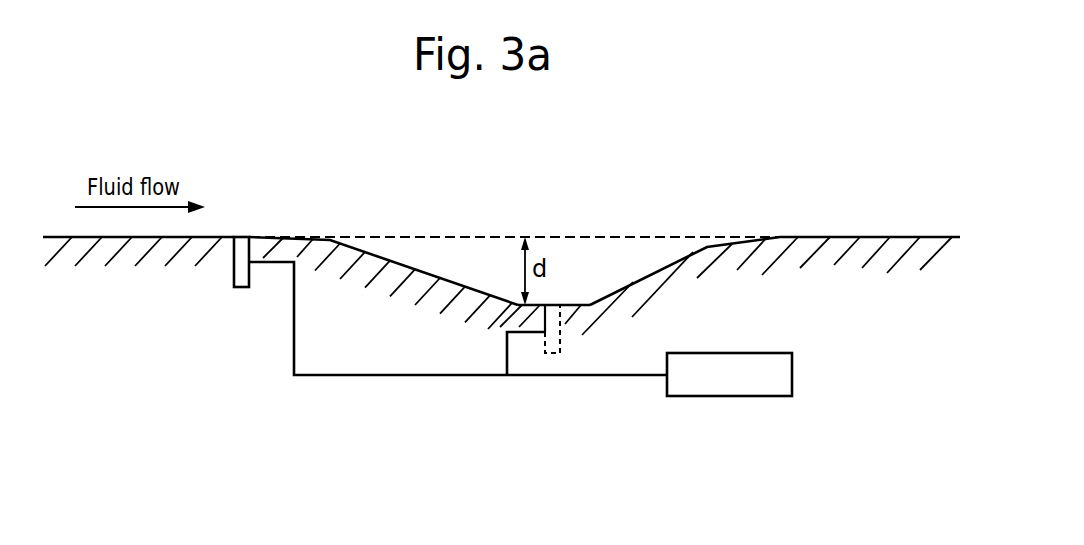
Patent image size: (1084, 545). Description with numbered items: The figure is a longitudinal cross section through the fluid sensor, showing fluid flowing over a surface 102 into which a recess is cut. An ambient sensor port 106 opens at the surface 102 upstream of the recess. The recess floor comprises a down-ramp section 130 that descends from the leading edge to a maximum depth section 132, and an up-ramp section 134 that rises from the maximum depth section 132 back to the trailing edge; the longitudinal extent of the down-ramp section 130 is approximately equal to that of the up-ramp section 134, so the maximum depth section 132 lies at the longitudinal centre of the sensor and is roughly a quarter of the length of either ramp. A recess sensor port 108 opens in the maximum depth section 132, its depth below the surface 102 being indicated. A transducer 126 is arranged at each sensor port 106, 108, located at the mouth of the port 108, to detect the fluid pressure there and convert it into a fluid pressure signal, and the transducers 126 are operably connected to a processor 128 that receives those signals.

The surface 102 is at (878, 237).
The ambient sensor port 106 is at (240, 237).
The recess sensor port 108 is at (555, 305).
The transducer 126 is at (227, 279).
The processor 128 is at (738, 380).
The down-ramp section 130 is at (433, 282).
The maximum depth section 132 is at (572, 305).
The up-ramp section 134 is at (660, 267).